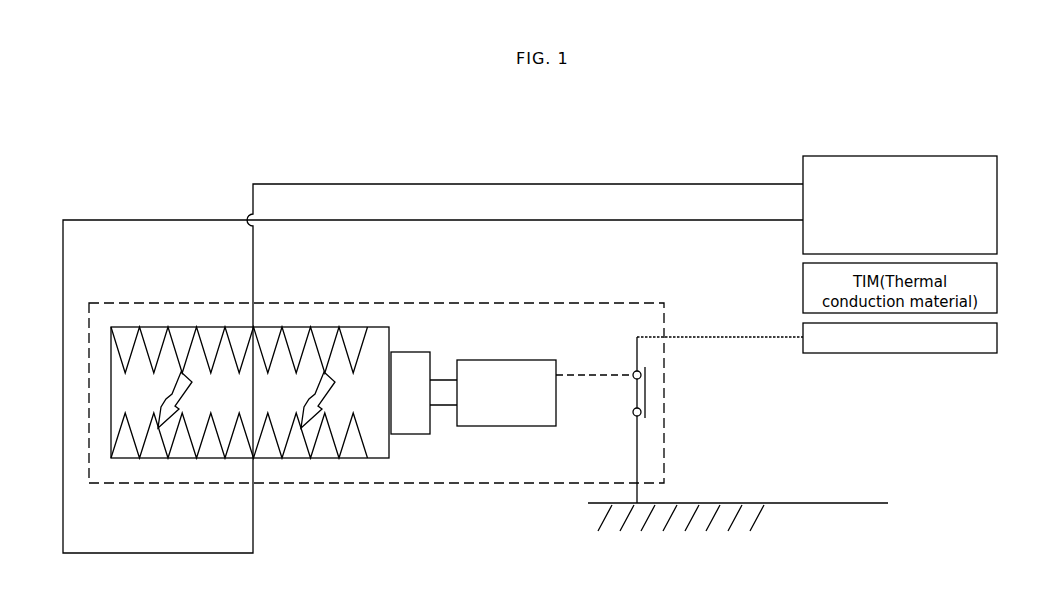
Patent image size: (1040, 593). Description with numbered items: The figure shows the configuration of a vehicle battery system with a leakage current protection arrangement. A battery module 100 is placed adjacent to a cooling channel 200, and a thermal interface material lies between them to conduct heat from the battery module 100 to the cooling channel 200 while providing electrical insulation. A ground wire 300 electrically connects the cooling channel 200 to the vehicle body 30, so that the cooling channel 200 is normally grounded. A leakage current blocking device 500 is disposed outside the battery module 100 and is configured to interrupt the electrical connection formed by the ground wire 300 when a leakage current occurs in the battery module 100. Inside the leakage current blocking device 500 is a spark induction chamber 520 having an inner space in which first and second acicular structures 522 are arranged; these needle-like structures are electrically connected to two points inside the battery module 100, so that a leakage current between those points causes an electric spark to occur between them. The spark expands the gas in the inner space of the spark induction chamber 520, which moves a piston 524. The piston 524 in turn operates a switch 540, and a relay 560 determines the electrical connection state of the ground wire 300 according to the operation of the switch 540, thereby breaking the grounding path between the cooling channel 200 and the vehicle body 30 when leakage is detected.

The battery module 100 is at (893, 156).
The cooling channel 200 is at (930, 354).
The ground wire 300 is at (728, 335).
The vehicle body 30 is at (831, 503).
The leakage current blocking device 500 is at (330, 484).
The spark induction chamber 520 is at (257, 356).
The first and second acicular structures 522 is at (208, 340).
The piston 524 is at (409, 434).
The switch 540 is at (505, 427).
The relay 560 is at (646, 392).